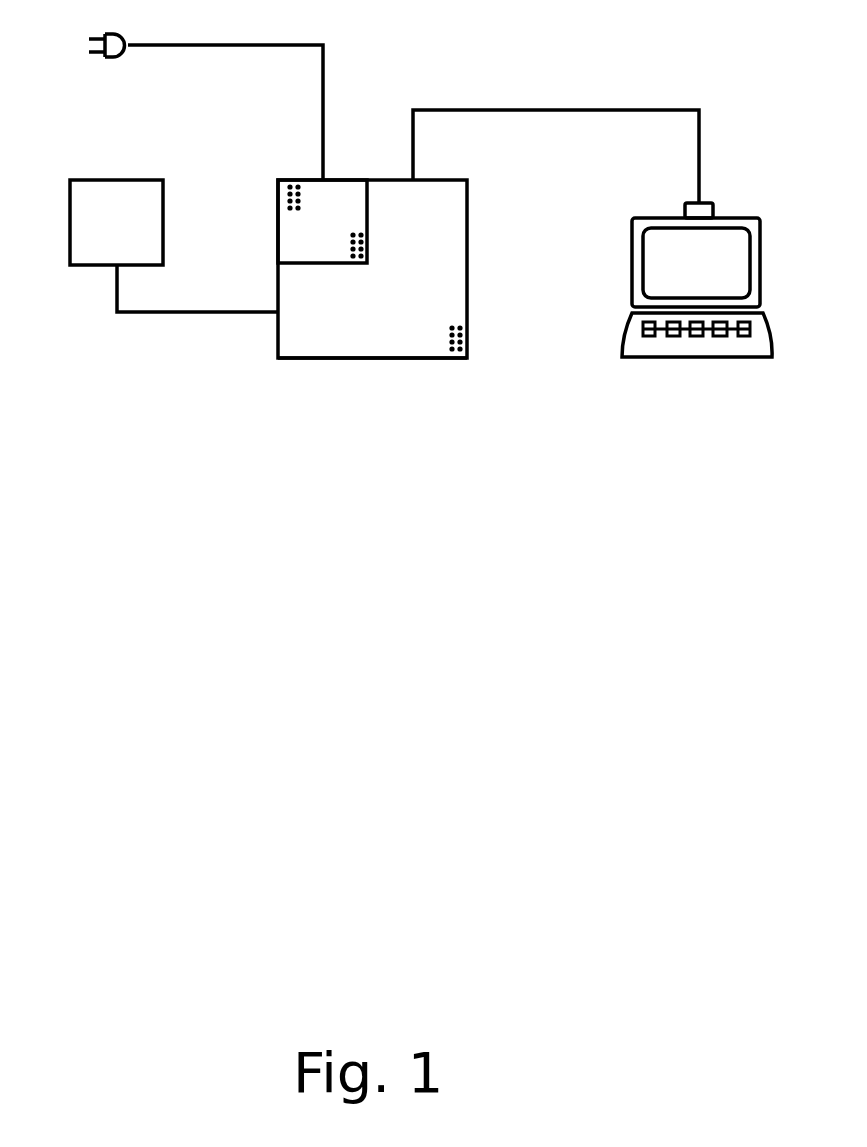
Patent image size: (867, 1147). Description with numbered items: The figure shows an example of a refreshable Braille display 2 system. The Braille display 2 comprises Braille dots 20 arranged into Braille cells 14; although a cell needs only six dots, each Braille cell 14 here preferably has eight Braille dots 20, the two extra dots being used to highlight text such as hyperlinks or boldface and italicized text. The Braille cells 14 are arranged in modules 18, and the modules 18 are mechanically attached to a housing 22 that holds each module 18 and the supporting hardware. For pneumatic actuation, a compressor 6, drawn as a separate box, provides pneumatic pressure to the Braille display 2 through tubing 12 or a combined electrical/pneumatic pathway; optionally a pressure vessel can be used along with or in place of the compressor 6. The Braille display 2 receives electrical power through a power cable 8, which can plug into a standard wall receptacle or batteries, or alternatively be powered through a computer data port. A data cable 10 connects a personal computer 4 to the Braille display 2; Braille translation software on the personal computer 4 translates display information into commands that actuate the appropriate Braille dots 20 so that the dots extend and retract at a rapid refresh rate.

The Braille display 2 is at (285, 358).
The personal computer 4 is at (672, 357).
The compressor 6 is at (70, 221).
The power cable 8 is at (323, 62).
The data cable 10 is at (588, 110).
The tubing 12 is at (192, 312).
The Braille cell 14 is at (258, 196).
The module 18 is at (370, 197).
The Braille dot 20 is at (455, 358).
The housing 22 is at (388, 358).